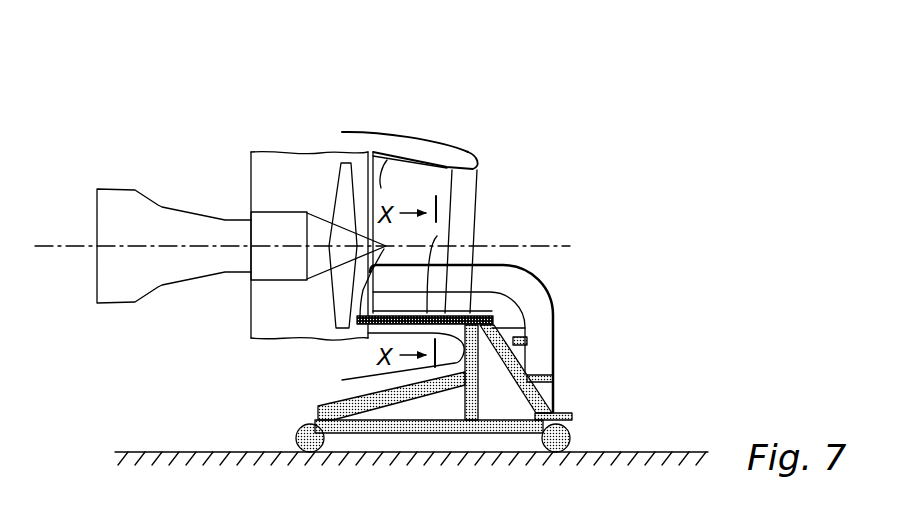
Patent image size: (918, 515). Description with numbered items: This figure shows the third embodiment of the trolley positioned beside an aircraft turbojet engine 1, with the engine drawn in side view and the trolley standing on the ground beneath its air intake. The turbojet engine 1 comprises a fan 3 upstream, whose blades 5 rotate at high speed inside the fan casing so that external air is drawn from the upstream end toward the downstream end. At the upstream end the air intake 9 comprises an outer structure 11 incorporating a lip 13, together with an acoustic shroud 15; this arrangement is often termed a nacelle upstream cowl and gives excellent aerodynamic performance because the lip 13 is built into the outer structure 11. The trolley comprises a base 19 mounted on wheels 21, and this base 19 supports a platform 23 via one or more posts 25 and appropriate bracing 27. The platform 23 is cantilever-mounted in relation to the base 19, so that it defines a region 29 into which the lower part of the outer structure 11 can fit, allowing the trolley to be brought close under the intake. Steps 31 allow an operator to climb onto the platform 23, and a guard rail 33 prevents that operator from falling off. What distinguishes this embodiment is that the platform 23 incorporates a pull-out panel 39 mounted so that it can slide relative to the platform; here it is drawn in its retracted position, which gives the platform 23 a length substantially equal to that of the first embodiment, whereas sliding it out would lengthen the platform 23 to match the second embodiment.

The aircraft turbojet engine 1 is at (173, 163).
The fan 3 is at (280, 306).
The blades 5 is at (339, 186).
The air intake 9 is at (404, 121).
The outer structure 11 is at (441, 134).
The lip 13 is at (480, 159).
The acoustic shroud 15 is at (397, 181).
The base 19 is at (425, 433).
The wheels 21 is at (296, 436).
The platform 23 is at (437, 236).
The post 25 is at (395, 397).
The bracing 27 is at (555, 410).
The region 29 is at (344, 400).
The steps 31 is at (542, 374).
The guard rail 33 is at (544, 283).
The pull-out panel 39 is at (358, 322).